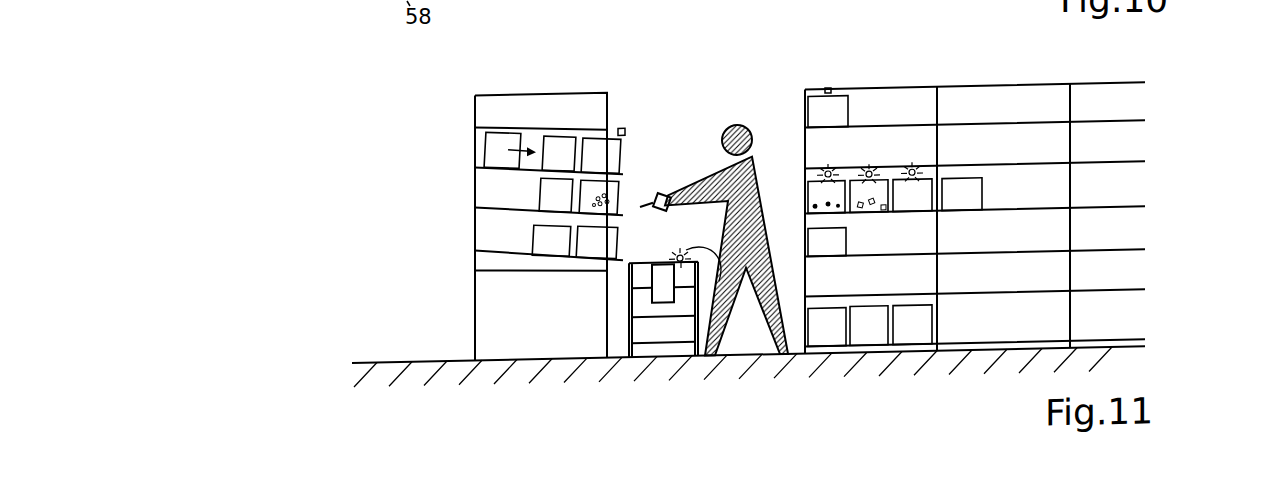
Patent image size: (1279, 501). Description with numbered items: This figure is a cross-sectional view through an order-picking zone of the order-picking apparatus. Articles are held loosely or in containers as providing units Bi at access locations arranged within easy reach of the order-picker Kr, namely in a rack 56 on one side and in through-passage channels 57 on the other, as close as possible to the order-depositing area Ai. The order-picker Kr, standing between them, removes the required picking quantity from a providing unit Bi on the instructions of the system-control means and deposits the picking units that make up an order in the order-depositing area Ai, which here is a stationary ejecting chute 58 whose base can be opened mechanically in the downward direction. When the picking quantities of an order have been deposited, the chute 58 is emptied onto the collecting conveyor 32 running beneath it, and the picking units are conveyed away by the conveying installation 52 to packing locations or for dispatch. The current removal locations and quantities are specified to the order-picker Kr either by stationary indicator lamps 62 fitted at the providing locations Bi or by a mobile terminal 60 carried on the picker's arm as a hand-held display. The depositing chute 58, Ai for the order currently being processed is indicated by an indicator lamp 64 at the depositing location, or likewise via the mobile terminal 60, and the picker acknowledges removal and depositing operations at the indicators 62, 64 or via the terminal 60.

The collecting conveyor 32 is at (637, 323).
The conveying installation 52 is at (680, 360).
The rack 56 is at (1140, 156).
The through-passage channel 57 is at (540, 131).
The ejecting chute 58 is at (624, 342).
The mobile terminal 60 is at (661, 200).
The indicator lamp 62 is at (621, 133).
The indicator lamp 64 is at (746, 282).
The providing unit Bi is at (593, 244).
The order-depositing area Ai is at (662, 269).
The order-picker Kr is at (738, 132).